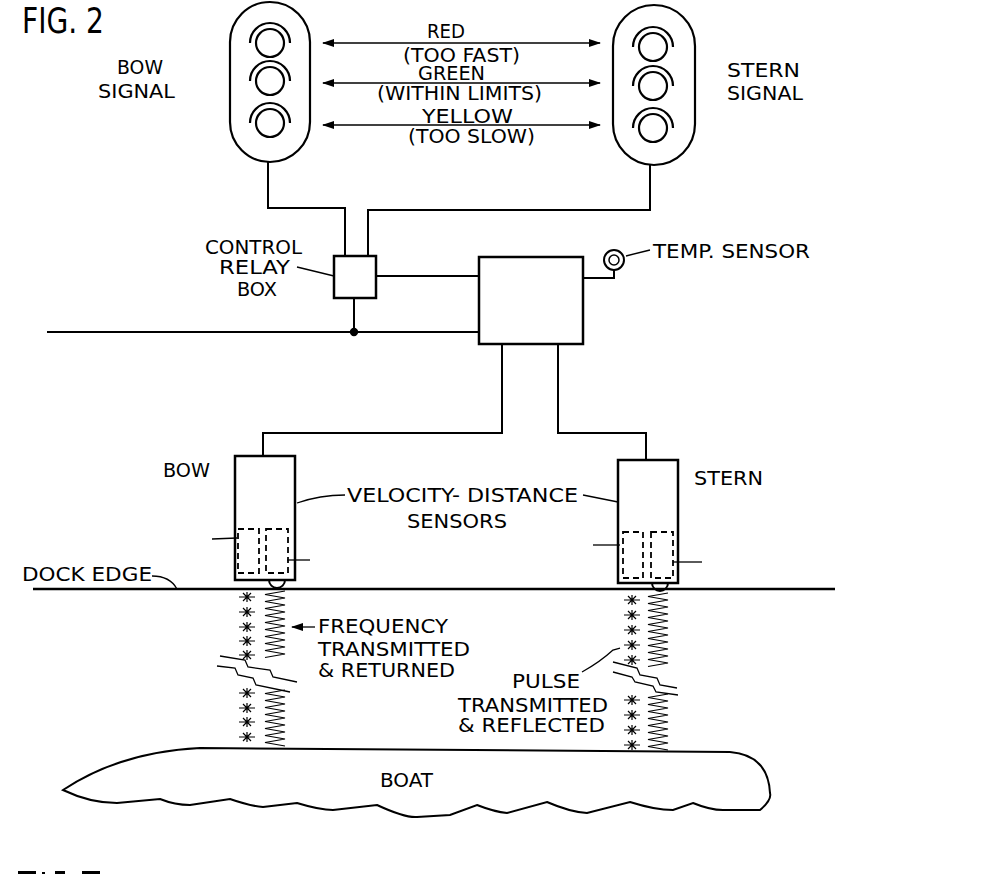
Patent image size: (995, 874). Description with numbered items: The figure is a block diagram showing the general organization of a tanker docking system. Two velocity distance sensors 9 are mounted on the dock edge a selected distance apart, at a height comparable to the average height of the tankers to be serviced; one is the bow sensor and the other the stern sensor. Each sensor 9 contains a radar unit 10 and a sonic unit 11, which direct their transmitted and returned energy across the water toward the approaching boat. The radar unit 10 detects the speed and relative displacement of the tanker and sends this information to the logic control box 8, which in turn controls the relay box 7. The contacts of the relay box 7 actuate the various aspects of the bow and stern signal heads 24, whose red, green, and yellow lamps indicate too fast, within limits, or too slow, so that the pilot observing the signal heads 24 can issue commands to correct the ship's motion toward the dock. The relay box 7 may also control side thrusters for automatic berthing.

The signal head 24 is at (298, 152).
The relay box 7 is at (378, 260).
The logic control box 8 is at (583, 333).
The velocity distance sensor 9 is at (456, 519).
The radar unit 10 is at (283, 528).
The sonic unit 11 is at (245, 527).